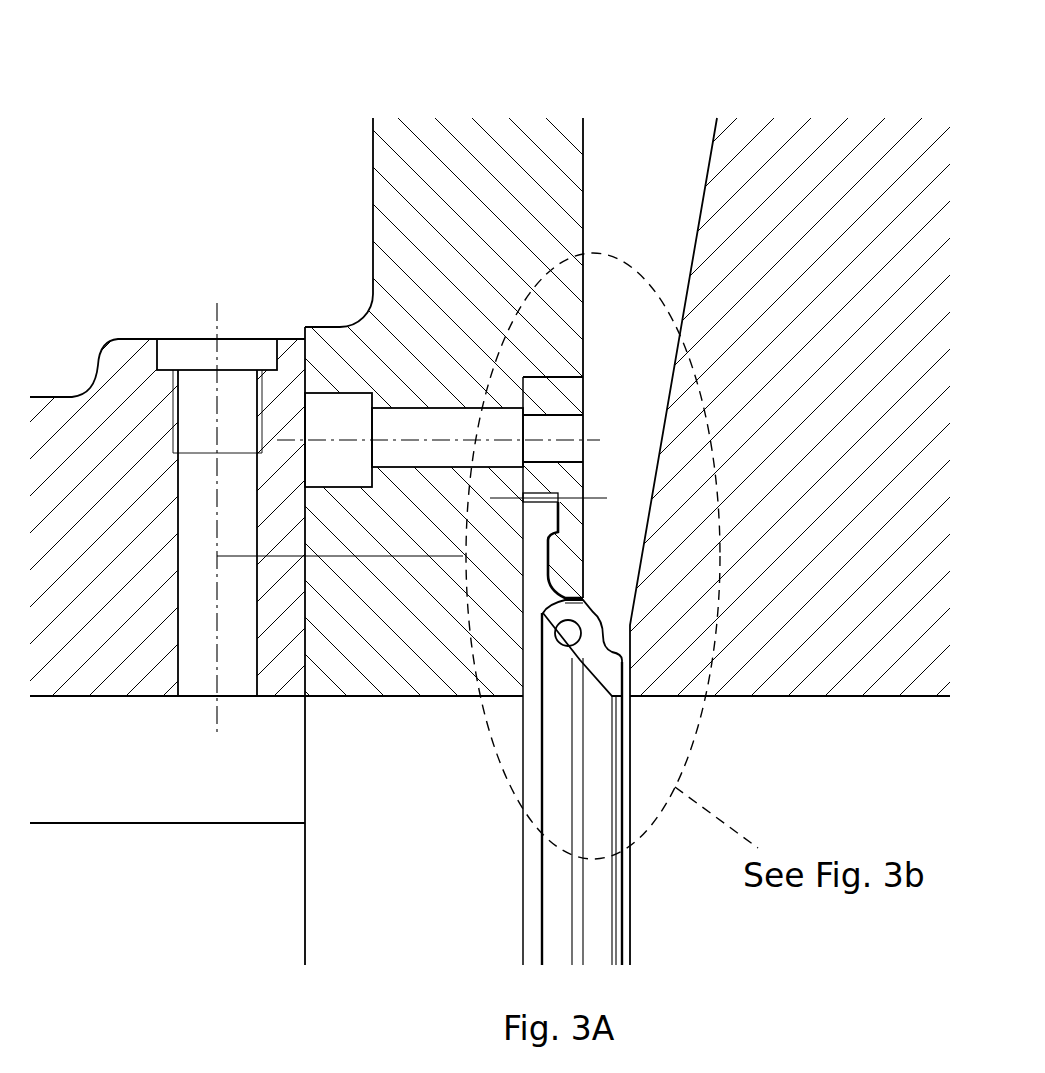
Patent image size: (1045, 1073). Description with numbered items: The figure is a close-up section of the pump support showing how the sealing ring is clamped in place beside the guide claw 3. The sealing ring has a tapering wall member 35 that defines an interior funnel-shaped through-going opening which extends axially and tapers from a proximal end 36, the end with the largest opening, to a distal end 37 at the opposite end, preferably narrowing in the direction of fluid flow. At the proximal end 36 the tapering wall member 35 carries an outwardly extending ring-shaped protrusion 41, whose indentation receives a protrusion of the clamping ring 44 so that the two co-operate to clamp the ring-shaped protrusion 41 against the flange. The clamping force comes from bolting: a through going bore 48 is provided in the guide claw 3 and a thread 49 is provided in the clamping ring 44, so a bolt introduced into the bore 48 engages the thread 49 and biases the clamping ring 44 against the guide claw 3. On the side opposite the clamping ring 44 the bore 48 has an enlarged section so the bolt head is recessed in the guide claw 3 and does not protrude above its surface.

The guide claw 3 is at (358, 157).
The through going bore 48 is at (423, 423).
The thread 49 is at (567, 410).
The clamping ring 44 is at (586, 498).
The outwardly extending ring-shaped protrusion 41 is at (518, 552).
The proximal end 36 is at (510, 603).
The tapering wall member 35 is at (547, 621).
The distal end 37 is at (597, 718).